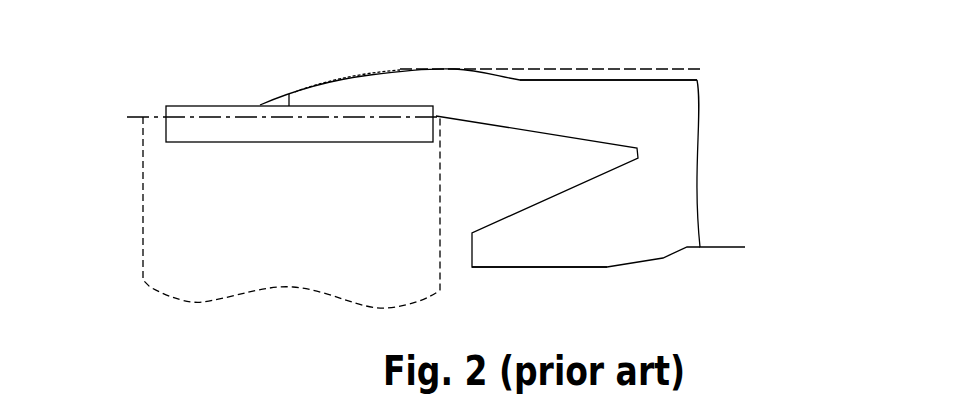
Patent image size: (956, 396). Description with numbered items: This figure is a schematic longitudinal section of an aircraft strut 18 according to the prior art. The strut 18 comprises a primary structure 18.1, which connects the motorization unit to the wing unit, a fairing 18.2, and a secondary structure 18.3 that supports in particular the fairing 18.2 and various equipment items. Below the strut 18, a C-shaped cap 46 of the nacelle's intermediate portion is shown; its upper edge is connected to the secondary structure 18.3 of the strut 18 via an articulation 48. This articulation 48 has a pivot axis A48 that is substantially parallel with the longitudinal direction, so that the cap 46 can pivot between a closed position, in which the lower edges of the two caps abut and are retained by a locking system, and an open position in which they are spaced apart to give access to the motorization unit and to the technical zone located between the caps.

The strut 18 is at (723, 83).
The primary structure 18.1 is at (563, 242).
The fairing 18.2 is at (490, 68).
The secondary structure 18.3 is at (540, 95).
The C-shaped cap 46 is at (143, 173).
The articulation 48 is at (202, 102).
The pivot axis A48 is at (156, 117).